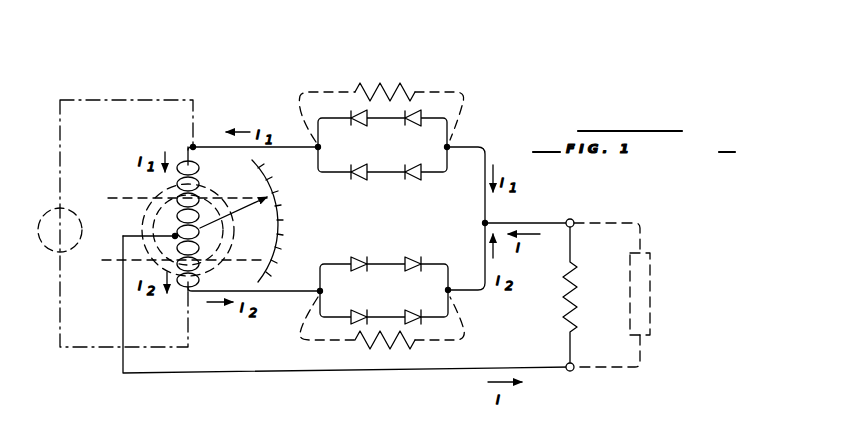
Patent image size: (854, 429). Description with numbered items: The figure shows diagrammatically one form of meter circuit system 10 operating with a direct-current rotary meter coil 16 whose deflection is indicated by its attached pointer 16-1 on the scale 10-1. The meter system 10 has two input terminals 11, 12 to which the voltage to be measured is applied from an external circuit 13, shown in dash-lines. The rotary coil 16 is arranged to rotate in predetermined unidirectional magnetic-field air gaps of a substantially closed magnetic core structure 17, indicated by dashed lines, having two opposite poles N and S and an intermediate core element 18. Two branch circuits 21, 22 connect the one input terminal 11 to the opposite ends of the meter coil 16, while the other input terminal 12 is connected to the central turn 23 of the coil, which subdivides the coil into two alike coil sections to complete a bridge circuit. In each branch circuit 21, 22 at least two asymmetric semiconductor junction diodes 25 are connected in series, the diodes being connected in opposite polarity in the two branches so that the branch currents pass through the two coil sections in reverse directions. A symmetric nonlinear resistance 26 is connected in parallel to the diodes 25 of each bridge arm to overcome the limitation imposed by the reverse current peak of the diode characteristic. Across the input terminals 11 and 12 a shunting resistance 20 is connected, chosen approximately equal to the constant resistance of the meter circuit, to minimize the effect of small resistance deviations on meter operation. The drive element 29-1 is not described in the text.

The meter circuit system 10 is at (536, 205).
The scale 10-1 is at (280, 216).
The input terminal 11 is at (576, 218).
The input terminal 12 is at (575, 371).
The external circuit 13 is at (652, 292).
The rotary meter coil 16 is at (198, 168).
The pointer 16-1 is at (242, 203).
The magnetic core structure 17 is at (125, 198).
The intermediate core element 18 is at (160, 186).
The shunting resistance 20 is at (577, 302).
The branch circuit 21 is at (466, 141).
The branch circuit 22 is at (474, 293).
The central turn 23 is at (172, 235).
The semiconductor junction diodes 25 is at (410, 166).
The symmetric nonlinear resistance 26 is at (387, 81).
The drive motor 29-1 is at (37, 220).